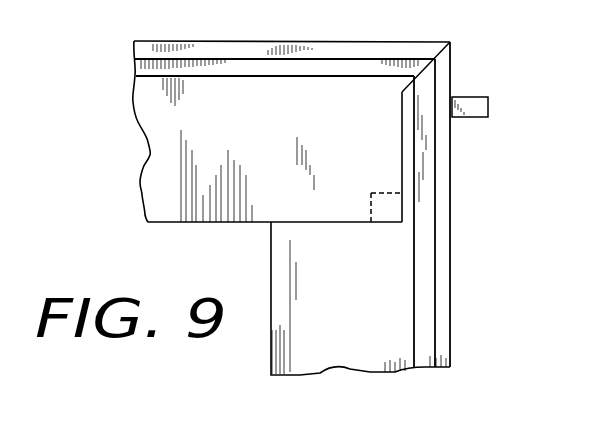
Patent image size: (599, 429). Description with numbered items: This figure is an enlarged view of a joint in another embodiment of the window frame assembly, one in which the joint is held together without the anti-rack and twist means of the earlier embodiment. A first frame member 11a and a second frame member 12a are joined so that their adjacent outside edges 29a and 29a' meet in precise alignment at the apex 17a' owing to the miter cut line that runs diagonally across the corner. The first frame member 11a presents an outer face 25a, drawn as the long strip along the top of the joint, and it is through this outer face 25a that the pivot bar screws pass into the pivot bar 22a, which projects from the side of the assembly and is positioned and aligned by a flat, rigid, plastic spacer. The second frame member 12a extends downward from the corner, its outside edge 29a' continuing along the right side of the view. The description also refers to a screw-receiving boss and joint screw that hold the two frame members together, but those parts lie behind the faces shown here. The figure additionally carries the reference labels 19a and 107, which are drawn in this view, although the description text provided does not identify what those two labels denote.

The first frame member 11a is at (217, 41).
The outer face of the first frame member 25a is at (313, 41).
The outside edge of the first frame member 29a is at (426, 48).
The apex 17a' is at (476, 185).
The outside edge of the second frame member 29a' is at (463, 200).
The inner frame edge 19a is at (402, 95).
The pivot bar 22a is at (488, 104).
The hidden fastener 107 is at (371, 193).
The second frame member 12a is at (450, 313).